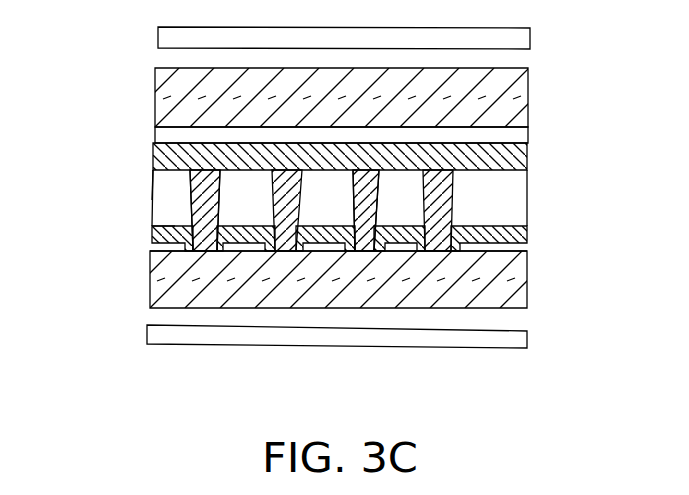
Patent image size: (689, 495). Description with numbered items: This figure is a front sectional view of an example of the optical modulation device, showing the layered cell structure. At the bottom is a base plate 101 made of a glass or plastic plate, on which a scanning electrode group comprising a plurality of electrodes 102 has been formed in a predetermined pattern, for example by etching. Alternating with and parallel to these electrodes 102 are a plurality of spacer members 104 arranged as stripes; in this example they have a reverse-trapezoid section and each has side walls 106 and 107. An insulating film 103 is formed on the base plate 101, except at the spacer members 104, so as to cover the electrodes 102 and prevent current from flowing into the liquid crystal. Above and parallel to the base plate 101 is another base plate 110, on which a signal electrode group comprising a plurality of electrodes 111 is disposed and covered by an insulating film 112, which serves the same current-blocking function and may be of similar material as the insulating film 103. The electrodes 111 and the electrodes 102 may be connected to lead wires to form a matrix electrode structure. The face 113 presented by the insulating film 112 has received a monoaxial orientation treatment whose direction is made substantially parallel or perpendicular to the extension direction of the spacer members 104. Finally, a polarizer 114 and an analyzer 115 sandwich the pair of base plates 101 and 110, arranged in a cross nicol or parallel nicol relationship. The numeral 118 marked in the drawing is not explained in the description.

The base plate 101 is at (518, 293).
The electrodes 102 is at (525, 250).
The insulating film 103 is at (523, 235).
The spacer members 104 is at (452, 197).
The side wall 106 is at (190, 204).
The side wall 107 is at (218, 198).
The base plate 110 is at (527, 93).
The electrodes 111 is at (528, 140).
The insulating film 112 is at (525, 160).
The face 113 is at (157, 173).
The polarizer 114 is at (531, 39).
The analyzer 115 is at (523, 340).
The discharge space floor 118 is at (173, 223).